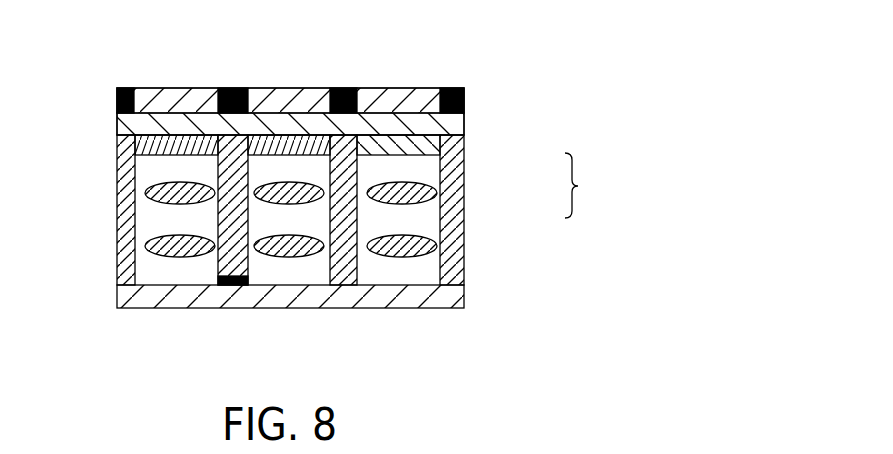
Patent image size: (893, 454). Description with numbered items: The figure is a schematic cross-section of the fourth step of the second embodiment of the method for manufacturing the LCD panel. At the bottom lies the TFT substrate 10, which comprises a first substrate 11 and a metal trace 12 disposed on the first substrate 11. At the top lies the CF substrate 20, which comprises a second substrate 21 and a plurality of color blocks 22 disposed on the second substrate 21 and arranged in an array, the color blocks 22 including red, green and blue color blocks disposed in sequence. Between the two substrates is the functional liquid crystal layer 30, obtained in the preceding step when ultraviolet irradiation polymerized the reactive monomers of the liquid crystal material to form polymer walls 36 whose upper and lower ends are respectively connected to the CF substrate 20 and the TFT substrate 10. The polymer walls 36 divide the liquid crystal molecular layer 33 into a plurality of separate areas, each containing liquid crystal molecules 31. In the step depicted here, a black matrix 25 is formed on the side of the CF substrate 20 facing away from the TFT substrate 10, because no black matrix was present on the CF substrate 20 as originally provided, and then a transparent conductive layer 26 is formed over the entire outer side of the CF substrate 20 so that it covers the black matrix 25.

The TFT substrate 10 is at (464, 296).
The first substrate 11 is at (170, 303).
The metal trace 12 is at (217, 283).
The CF substrate 20 is at (302, 78).
The second substrate 21 is at (155, 148).
The color blocks 22 is at (120, 133).
The black matrix 25 is at (233, 88).
The transparent conductive layer 26 is at (307, 88).
The functional liquid crystal layer 30 is at (596, 185).
The liquid crystal molecules 31 is at (163, 245).
The liquid crystal molecular layer 33 is at (367, 243).
The polymer walls 36 is at (440, 163).